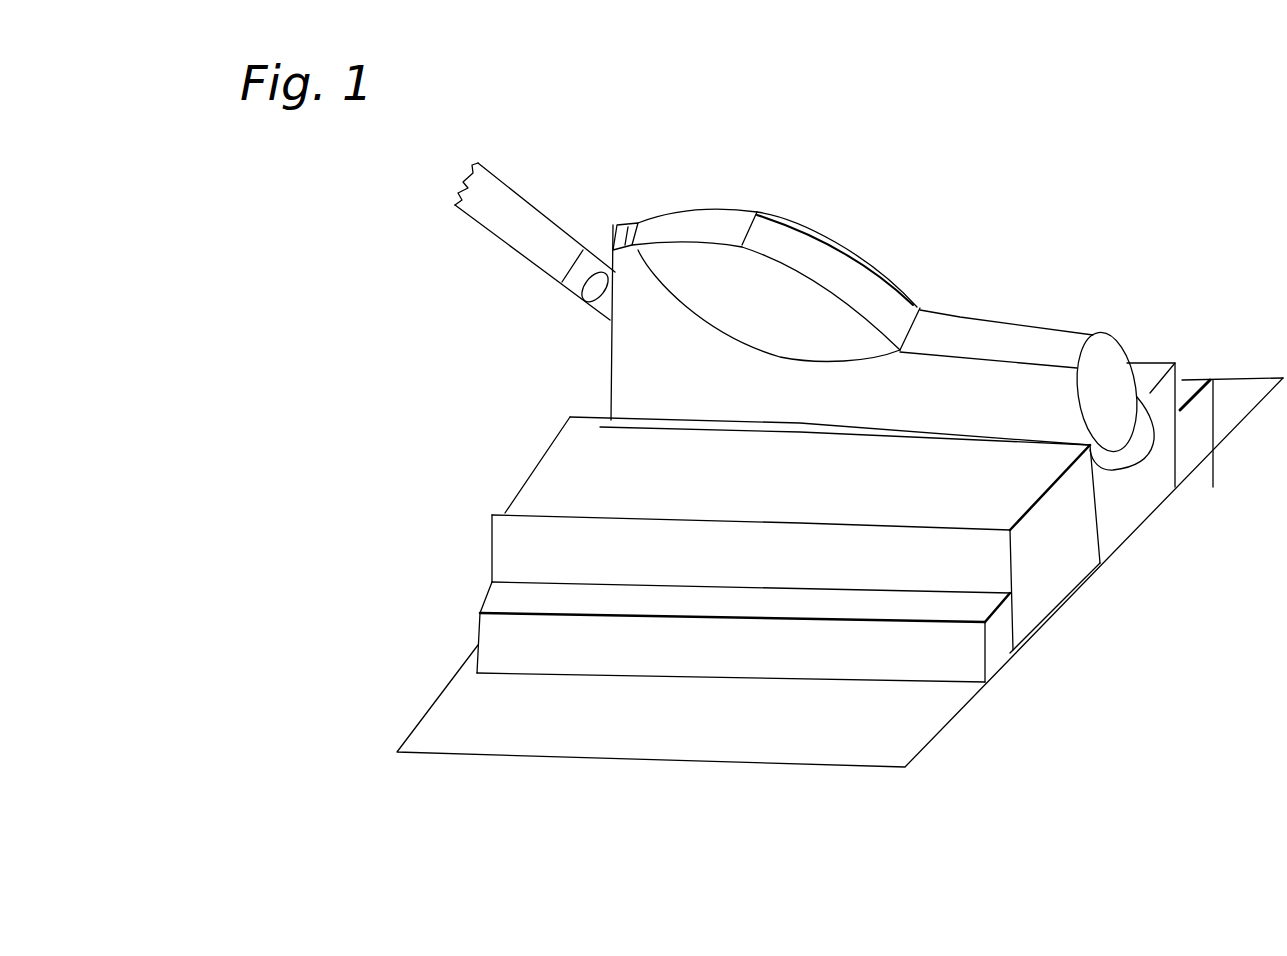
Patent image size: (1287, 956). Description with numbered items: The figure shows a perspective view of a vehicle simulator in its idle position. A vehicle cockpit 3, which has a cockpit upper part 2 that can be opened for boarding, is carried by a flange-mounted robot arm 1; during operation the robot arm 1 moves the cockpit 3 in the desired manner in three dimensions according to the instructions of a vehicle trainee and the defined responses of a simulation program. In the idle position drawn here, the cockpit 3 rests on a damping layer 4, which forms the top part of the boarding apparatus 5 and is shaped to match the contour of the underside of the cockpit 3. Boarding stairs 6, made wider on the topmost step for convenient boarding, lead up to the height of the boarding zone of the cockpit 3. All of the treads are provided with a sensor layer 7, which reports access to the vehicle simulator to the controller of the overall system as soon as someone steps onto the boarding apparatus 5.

The robot arm 1 is at (507, 237).
The cockpit upper part 2 is at (807, 233).
The vehicle cockpit 3 is at (1010, 330).
The damping layer 4 is at (1130, 453).
The boarding apparatus 5 is at (1127, 493).
The boarding stairs 6 is at (1073, 548).
The sensor layer 7 is at (1023, 513).